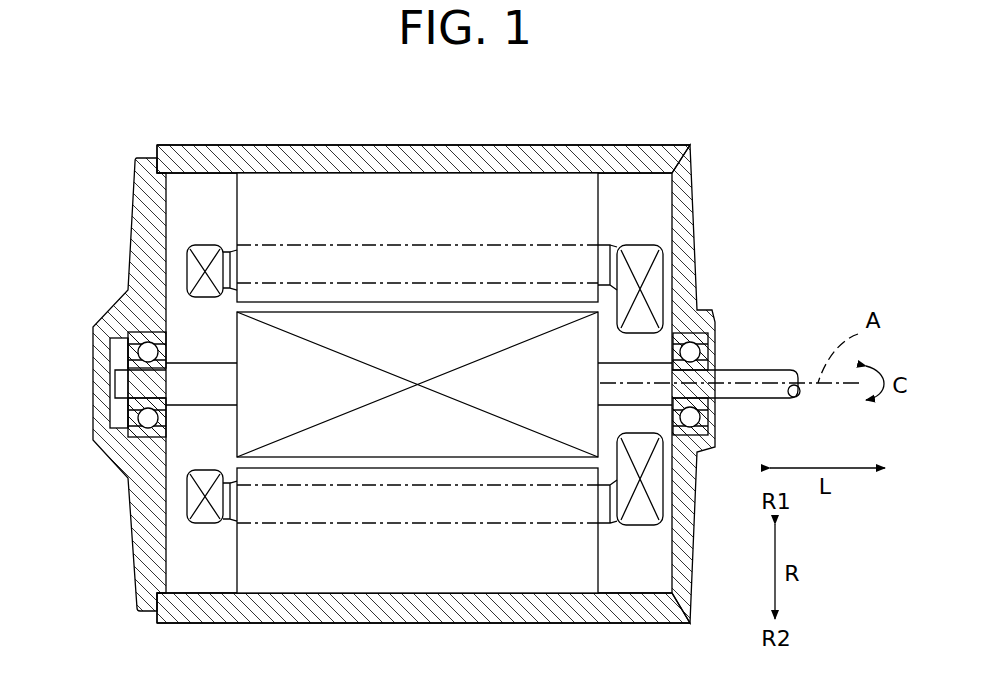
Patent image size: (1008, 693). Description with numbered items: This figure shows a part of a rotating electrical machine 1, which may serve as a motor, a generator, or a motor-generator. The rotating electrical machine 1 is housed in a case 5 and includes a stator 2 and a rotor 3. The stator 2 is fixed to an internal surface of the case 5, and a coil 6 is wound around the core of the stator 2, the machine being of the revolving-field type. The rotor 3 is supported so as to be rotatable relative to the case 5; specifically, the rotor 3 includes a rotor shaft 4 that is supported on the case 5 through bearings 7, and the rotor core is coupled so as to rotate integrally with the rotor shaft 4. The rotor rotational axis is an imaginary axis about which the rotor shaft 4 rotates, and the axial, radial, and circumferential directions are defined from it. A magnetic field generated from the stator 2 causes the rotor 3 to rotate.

The rotating electrical machine 1 is at (106, 157).
The stator 2 is at (435, 203).
The rotor 3 is at (420, 458).
The rotor shaft 4 is at (203, 393).
The case 5 is at (570, 143).
The coil 6 is at (638, 525).
The bearings 7 is at (128, 348).